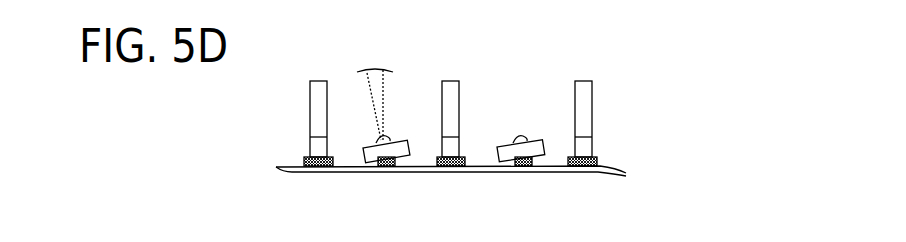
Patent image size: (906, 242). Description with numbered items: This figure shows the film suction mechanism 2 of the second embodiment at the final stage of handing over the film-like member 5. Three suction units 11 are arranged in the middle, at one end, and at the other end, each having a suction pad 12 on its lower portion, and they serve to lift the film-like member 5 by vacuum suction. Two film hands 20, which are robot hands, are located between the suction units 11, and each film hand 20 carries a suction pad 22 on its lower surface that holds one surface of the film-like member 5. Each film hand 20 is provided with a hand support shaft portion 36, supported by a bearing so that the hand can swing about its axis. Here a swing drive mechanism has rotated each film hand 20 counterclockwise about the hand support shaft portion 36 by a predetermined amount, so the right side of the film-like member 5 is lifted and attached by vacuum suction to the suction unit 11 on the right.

The film suction mechanism 2 is at (676, 107).
The film-like member 5 is at (614, 177).
The suction unit 11 is at (309, 119).
The suction pad 12 is at (304, 162).
The film hand 20 is at (365, 150).
The suction pad 22 is at (387, 168).
The hand support shaft portion 36 is at (388, 140).